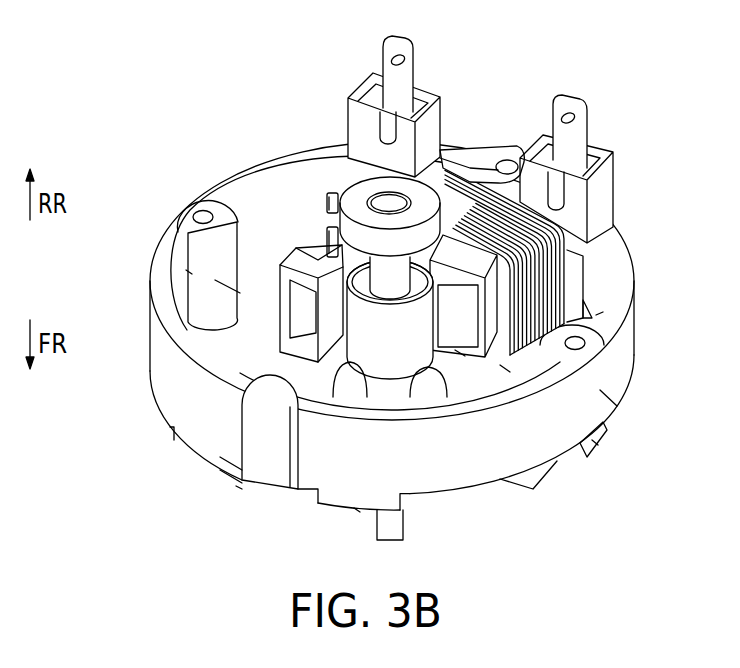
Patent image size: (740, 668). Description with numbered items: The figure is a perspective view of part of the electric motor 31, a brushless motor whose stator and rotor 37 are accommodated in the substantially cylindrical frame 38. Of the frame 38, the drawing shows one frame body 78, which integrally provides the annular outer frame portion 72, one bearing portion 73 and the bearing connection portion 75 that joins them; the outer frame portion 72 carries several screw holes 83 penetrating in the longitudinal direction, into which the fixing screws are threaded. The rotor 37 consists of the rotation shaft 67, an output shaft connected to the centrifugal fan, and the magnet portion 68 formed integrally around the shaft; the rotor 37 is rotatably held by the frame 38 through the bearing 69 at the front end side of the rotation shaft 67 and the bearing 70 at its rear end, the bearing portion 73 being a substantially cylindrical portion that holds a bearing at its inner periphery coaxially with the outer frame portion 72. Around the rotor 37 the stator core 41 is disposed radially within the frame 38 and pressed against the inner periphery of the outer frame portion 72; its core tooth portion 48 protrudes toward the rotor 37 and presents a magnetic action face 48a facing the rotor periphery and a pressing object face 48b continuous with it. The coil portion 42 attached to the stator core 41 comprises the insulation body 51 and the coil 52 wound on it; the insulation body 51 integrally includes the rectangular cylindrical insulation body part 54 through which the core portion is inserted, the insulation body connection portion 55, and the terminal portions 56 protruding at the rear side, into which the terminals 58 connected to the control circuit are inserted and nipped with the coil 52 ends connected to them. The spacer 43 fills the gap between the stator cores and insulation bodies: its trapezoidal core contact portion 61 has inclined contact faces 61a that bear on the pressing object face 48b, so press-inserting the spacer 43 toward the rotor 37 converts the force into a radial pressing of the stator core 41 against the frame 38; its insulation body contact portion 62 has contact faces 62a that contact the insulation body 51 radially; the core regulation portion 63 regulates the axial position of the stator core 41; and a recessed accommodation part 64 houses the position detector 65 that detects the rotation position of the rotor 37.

The electric motor 31 is at (506, 74).
The rotor 37 is at (393, 340).
The frame 38 is at (623, 352).
The stator core 41 is at (567, 255).
The coil portion 42 is at (578, 285).
The spacer 43 is at (312, 258).
The core tooth portion 48 is at (535, 380).
The magnetic action face 48a is at (462, 355).
The pressing object face 48b is at (505, 370).
The insulation body 51 is at (590, 298).
The coil 52 is at (565, 268).
The insulation body part 54 is at (600, 313).
The insulation body connection portion 55 is at (455, 163).
The terminal portion 56 is at (600, 150).
The terminal 58 is at (567, 104).
The core contact portion 61 is at (228, 455).
The contact face 61a is at (232, 400).
The insulation body contact portion 62 is at (230, 258).
The contact face 62a is at (240, 293).
The core regulation portion 63 is at (301, 362).
The accommodation part 64 is at (330, 243).
The position detector 65 is at (340, 212).
The rotation shaft 67 is at (385, 200).
The magnet portion 68 is at (372, 340).
The bearing 69 is at (421, 395).
The bearing 70 is at (413, 187).
The outer frame portion 72 is at (617, 408).
The bearing portion 73 is at (437, 345).
The bearing connection portion 75 is at (594, 445).
The frame body 78 is at (160, 392).
The screw hole 83 is at (505, 160).